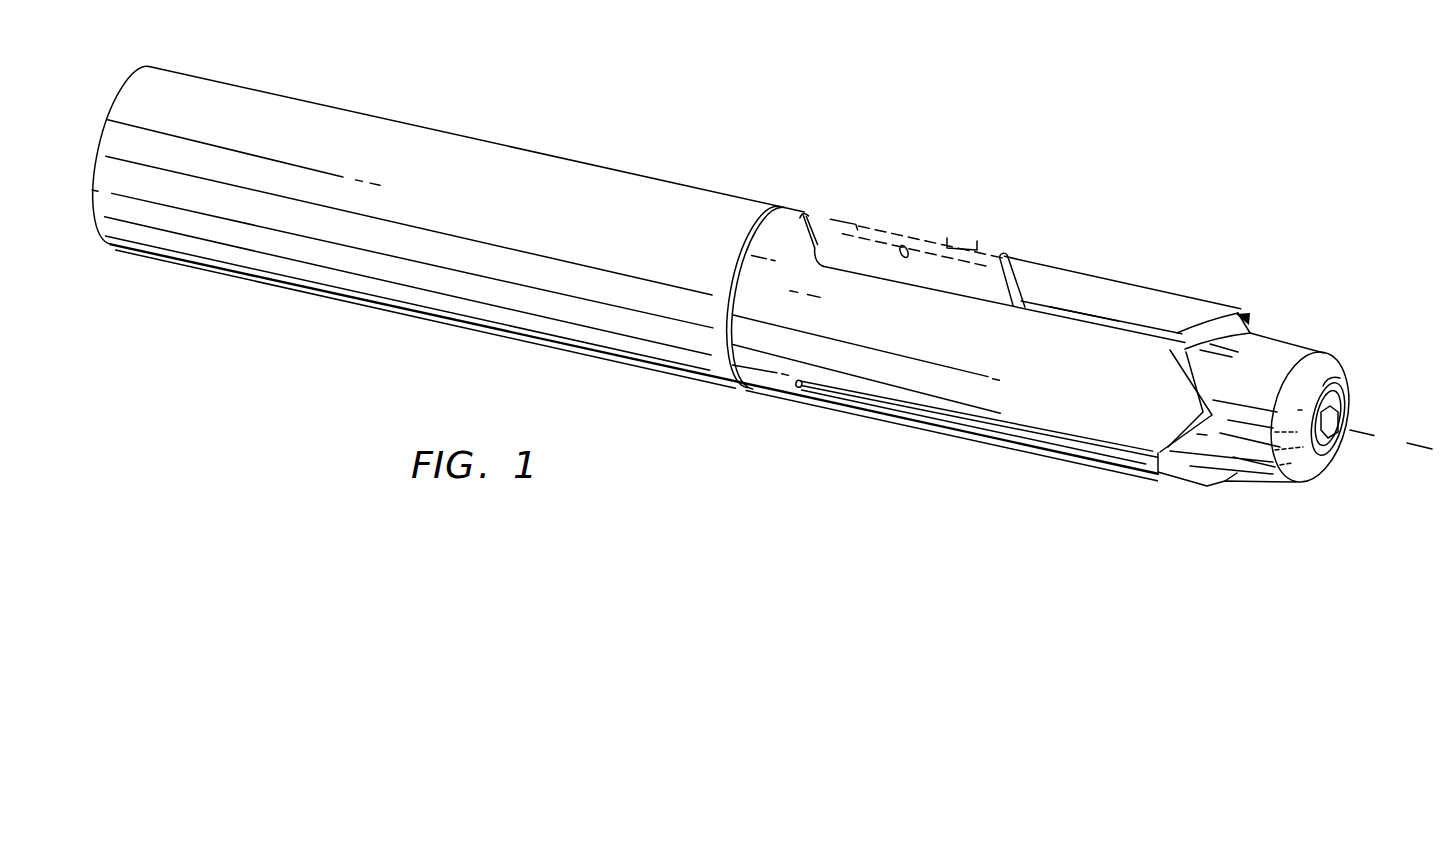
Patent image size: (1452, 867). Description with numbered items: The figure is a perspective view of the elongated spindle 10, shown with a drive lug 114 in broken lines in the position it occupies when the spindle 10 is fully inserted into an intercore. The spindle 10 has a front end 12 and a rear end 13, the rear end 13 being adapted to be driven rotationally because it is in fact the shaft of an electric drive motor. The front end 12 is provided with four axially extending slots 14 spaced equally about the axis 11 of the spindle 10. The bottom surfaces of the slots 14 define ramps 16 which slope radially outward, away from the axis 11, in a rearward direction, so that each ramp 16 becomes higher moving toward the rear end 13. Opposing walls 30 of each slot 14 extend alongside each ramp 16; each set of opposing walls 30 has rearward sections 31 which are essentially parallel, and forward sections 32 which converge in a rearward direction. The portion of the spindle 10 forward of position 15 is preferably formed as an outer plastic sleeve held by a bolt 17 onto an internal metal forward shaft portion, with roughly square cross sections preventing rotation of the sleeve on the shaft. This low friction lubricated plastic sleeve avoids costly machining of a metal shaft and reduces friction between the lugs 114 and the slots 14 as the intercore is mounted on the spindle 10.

The spindle 10 is at (637, 165).
The axis 11 is at (1388, 451).
The front end 12 is at (1286, 503).
The rear end 13 is at (145, 284).
The slots 14 is at (1059, 306).
The position 15 is at (780, 207).
The ramps 16 is at (1083, 318).
The bolt 17 is at (1328, 385).
The opposing walls 30 is at (1155, 330).
The rearward sections 31 is at (1127, 327).
The forward sections 32 is at (1226, 323).
The drive lug 114 is at (848, 203).